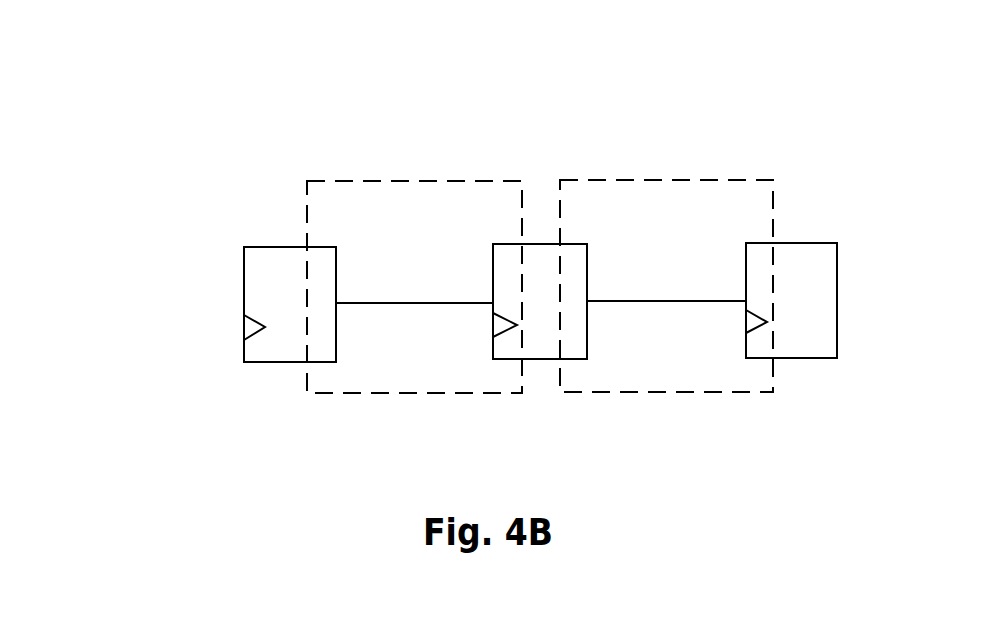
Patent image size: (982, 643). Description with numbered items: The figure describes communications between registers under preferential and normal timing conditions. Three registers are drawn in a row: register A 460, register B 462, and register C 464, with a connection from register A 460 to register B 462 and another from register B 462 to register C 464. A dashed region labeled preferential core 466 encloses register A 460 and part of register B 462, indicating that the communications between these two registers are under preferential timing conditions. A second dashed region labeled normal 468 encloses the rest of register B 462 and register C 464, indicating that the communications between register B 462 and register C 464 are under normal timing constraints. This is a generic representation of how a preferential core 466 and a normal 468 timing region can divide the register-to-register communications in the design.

The register A 460 is at (244, 273).
The register B 462 is at (493, 272).
The register C 464 is at (746, 270).
The preferential core 466 is at (478, 181).
The normal 468 is at (742, 178).